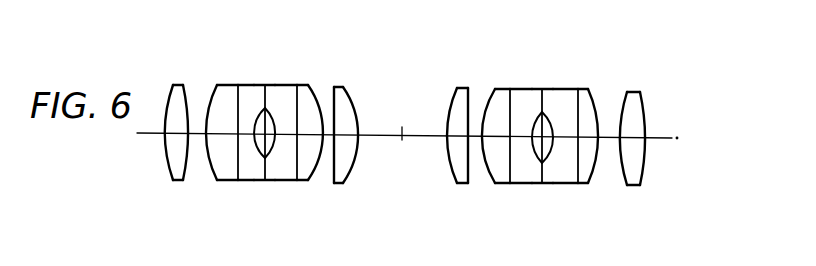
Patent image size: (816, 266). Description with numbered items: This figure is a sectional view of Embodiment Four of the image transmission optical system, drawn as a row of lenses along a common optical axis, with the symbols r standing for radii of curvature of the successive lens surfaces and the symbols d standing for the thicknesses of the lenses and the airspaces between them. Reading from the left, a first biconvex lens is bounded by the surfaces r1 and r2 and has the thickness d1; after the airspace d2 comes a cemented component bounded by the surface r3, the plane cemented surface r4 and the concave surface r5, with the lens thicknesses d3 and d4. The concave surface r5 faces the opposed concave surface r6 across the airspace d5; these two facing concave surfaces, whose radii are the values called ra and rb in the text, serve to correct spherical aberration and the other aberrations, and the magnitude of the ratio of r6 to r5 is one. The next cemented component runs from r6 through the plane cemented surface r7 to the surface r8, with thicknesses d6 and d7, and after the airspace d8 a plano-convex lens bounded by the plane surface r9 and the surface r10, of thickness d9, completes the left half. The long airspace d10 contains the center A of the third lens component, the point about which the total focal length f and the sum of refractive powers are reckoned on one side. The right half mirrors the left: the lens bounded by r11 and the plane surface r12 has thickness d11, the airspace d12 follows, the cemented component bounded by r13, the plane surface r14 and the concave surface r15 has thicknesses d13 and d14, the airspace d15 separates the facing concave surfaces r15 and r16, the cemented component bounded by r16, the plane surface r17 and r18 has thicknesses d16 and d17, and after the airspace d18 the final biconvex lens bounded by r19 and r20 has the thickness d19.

The center of the third lens component A is at (400, 146).
The radius of curvature of the first lens surface r1 is at (167, 107).
The radius of curvature of the second lens surface r2 is at (185, 92).
The radius of curvature of the third lens surface r3 is at (208, 107).
The radius of curvature of the fourth lens surface r4 is at (238, 100).
The radius of curvature of the fifth lens surface r5 is at (257, 112).
The radius of curvature of the sixth lens surface r6 is at (273, 112).
The radius of curvature of the seventh lens surface r7 is at (297, 102).
The radius of curvature of the eighth lens surface r8 is at (315, 95).
The radius of curvature of the ninth lens surface r9 is at (334, 92).
The radius of curvature of the tenth lens surface r10 is at (349, 95).
The radius of curvature of the eleventh lens surface r11 is at (452, 100).
The radius of curvature of the twelfth lens surface r12 is at (468, 92).
The radius of curvature of the thirteenth lens surface r13 is at (488, 102).
The radius of curvature of the fourteenth lens surface r14 is at (510, 98).
The radius of curvature of the fifteenth lens surface r15 is at (534, 116).
The radius of curvature of the sixteenth lens surface r16 is at (550, 113).
The radius of curvature of the seventeenth lens surface r17 is at (578, 104).
The radius of curvature of the eighteenth lens surface r18 is at (593, 100).
The radius of curvature of the nineteenth lens surface r19 is at (625, 96).
The radius of curvature of the twentieth lens surface r20 is at (642, 104).
The thickness of the first lens d1 is at (165, 143).
The airspace between the first and second lenses d2 is at (197, 152).
The thickness of the second lens d3 is at (227, 155).
The thickness of the third lens d4 is at (248, 160).
The airspace between the concave surfaces r5 and r6 d5 is at (259, 160).
The thickness of the fourth lens d6 is at (283, 160).
The thickness of the fifth lens d7 is at (312, 158).
The airspace between the fifth and sixth lenses d8 is at (329, 158).
The thickness of the sixth lens d9 is at (347, 158).
The airspace between the sixth and seventh lenses d10 is at (376, 140).
The thickness of the seventh lens d11 is at (451, 158).
The airspace between the seventh and eighth lenses d12 is at (476, 160).
The thickness of the eighth lens d13 is at (501, 158).
The thickness of the ninth lens d14 is at (522, 160).
The airspace between the concave surfaces r15 and r16 d15 is at (537, 160).
The thickness of the tenth lens d16 is at (564, 160).
The thickness of the eleventh lens d17 is at (588, 158).
The airspace between the eleventh and twelfth lenses d18 is at (608, 160).
The thickness of the twelfth lens d19 is at (634, 158).